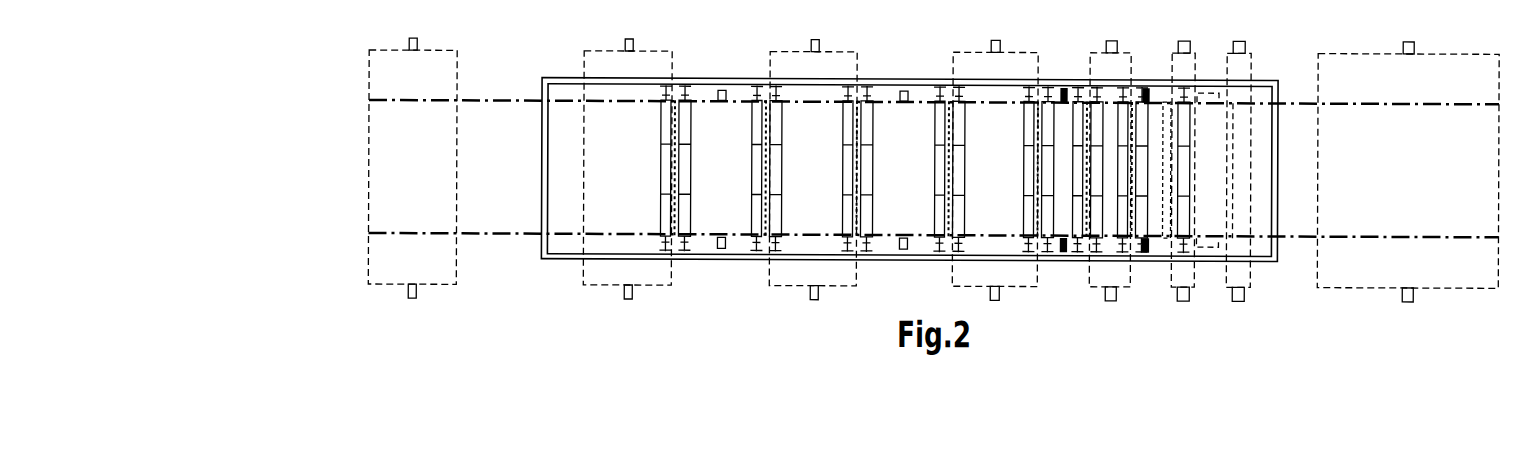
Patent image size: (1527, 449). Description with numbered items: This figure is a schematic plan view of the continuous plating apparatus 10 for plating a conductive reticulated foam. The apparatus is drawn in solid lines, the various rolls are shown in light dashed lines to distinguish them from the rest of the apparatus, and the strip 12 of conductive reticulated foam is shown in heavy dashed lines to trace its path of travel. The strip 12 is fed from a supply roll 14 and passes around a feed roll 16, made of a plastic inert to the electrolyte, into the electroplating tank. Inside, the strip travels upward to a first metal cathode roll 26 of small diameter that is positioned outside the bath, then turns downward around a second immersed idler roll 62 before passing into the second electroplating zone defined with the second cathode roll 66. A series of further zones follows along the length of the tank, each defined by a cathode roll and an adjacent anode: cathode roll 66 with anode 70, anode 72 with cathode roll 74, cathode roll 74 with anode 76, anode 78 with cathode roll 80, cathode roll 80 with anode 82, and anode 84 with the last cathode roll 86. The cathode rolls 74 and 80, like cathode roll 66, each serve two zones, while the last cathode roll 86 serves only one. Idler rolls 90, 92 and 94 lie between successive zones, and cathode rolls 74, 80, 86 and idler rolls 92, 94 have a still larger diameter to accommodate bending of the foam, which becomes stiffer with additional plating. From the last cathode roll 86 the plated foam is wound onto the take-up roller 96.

The continuous plating apparatus 10 is at (1195, 328).
The strip of conductive reticulated foam 12 is at (1313, 98).
The supply roll 14 is at (1437, 73).
The feed roll 16 is at (1230, 63).
The first metal cathode roll 26 is at (1177, 64).
The second immersed idler roll 62 is at (1158, 226).
The second cathode roll 66 is at (1103, 59).
The anode 70 is at (1080, 157).
The anode 72 is at (1027, 174).
The cathode roll 74 is at (977, 60).
The anode 76 is at (942, 173).
The anode 78 is at (872, 162).
The cathode roll 80 is at (792, 63).
The anode 82 is at (777, 152).
The anode 84 is at (686, 152).
The last cathode roll 86 is at (613, 62).
The idler roll 90 is at (1063, 229).
The idler roll 92 is at (897, 216).
The idler roll 94 is at (722, 214).
The take-up roller 96 is at (425, 67).